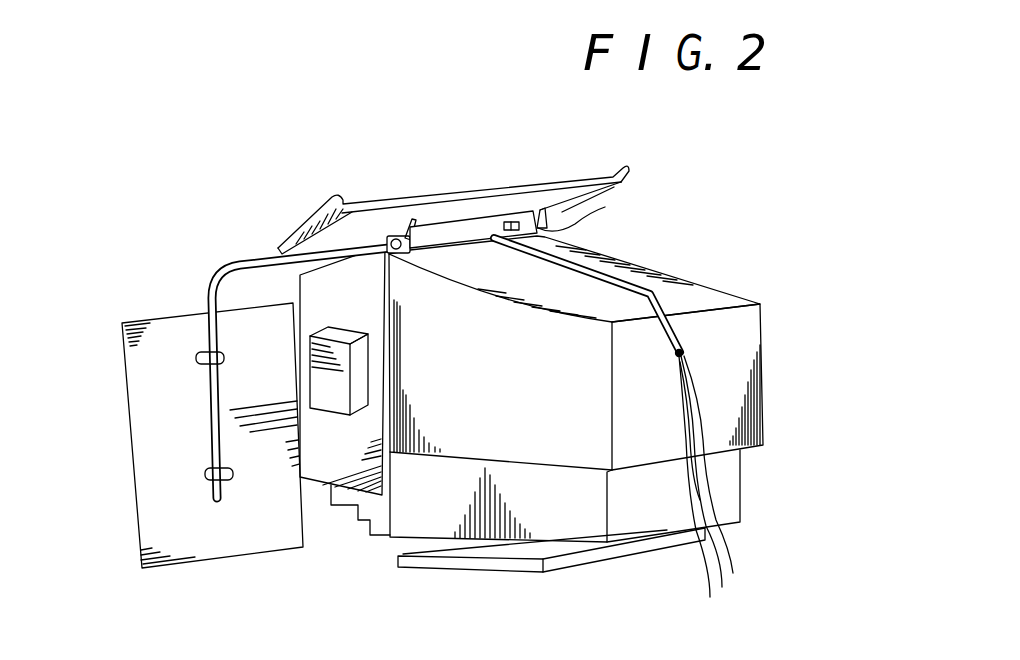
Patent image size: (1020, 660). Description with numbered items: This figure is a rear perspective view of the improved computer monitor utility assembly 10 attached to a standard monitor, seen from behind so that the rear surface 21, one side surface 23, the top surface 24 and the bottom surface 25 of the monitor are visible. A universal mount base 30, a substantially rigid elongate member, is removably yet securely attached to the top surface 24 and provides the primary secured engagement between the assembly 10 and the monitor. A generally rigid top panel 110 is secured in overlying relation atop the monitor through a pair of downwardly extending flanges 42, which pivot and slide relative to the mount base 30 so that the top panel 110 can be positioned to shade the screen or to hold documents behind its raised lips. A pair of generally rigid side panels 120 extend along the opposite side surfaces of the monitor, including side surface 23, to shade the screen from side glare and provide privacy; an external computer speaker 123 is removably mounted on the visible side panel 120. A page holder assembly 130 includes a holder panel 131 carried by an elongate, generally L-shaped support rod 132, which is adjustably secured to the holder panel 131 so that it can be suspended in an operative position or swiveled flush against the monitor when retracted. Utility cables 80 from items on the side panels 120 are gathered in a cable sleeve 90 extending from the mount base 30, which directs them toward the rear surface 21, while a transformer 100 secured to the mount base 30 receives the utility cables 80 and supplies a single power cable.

The computer monitor utility assembly 10 is at (294, 124).
The rear surface 21 is at (657, 382).
The side surface 23 is at (500, 368).
The top surface 24 is at (500, 283).
The bottom surface 25 is at (402, 546).
The universal mount base 30 is at (540, 233).
The flange 42 is at (406, 228).
The utility cable 80 is at (752, 553).
The cable sleeve 90 is at (640, 284).
The transformer 100 is at (460, 232).
The top panel 110 is at (470, 200).
The side panel 120 is at (366, 309).
The external computer speaker 123 is at (332, 390).
The page holder assembly 130 is at (195, 258).
The holder panel 131 is at (137, 317).
The support rod 132 is at (243, 260).